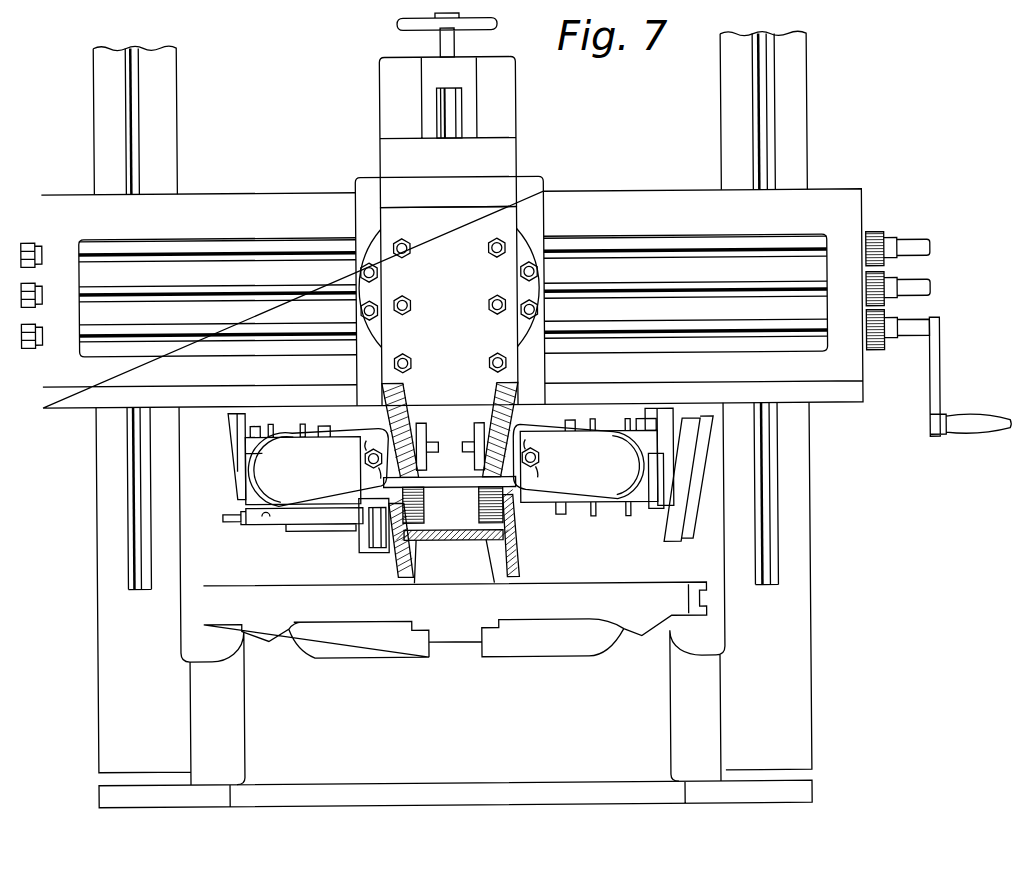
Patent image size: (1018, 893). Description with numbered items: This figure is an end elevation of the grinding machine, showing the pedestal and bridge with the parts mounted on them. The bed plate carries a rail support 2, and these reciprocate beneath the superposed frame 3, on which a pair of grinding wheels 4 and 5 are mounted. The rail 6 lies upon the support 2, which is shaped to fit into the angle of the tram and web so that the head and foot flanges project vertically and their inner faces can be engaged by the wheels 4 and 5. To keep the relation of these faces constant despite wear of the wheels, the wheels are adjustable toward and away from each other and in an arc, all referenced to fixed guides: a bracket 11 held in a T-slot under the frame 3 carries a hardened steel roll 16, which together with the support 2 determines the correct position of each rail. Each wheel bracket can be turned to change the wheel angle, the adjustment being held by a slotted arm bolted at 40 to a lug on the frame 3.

The rail support 2 is at (454, 562).
The superposed frame 3 is at (472, 481).
The grinding wheel 4 is at (408, 394).
The grinding wheel 5 is at (497, 401).
The rail 6 is at (460, 537).
The bracket 11 is at (336, 525).
The hardened steel roll 16 is at (378, 528).
The bolt 40 is at (541, 457).